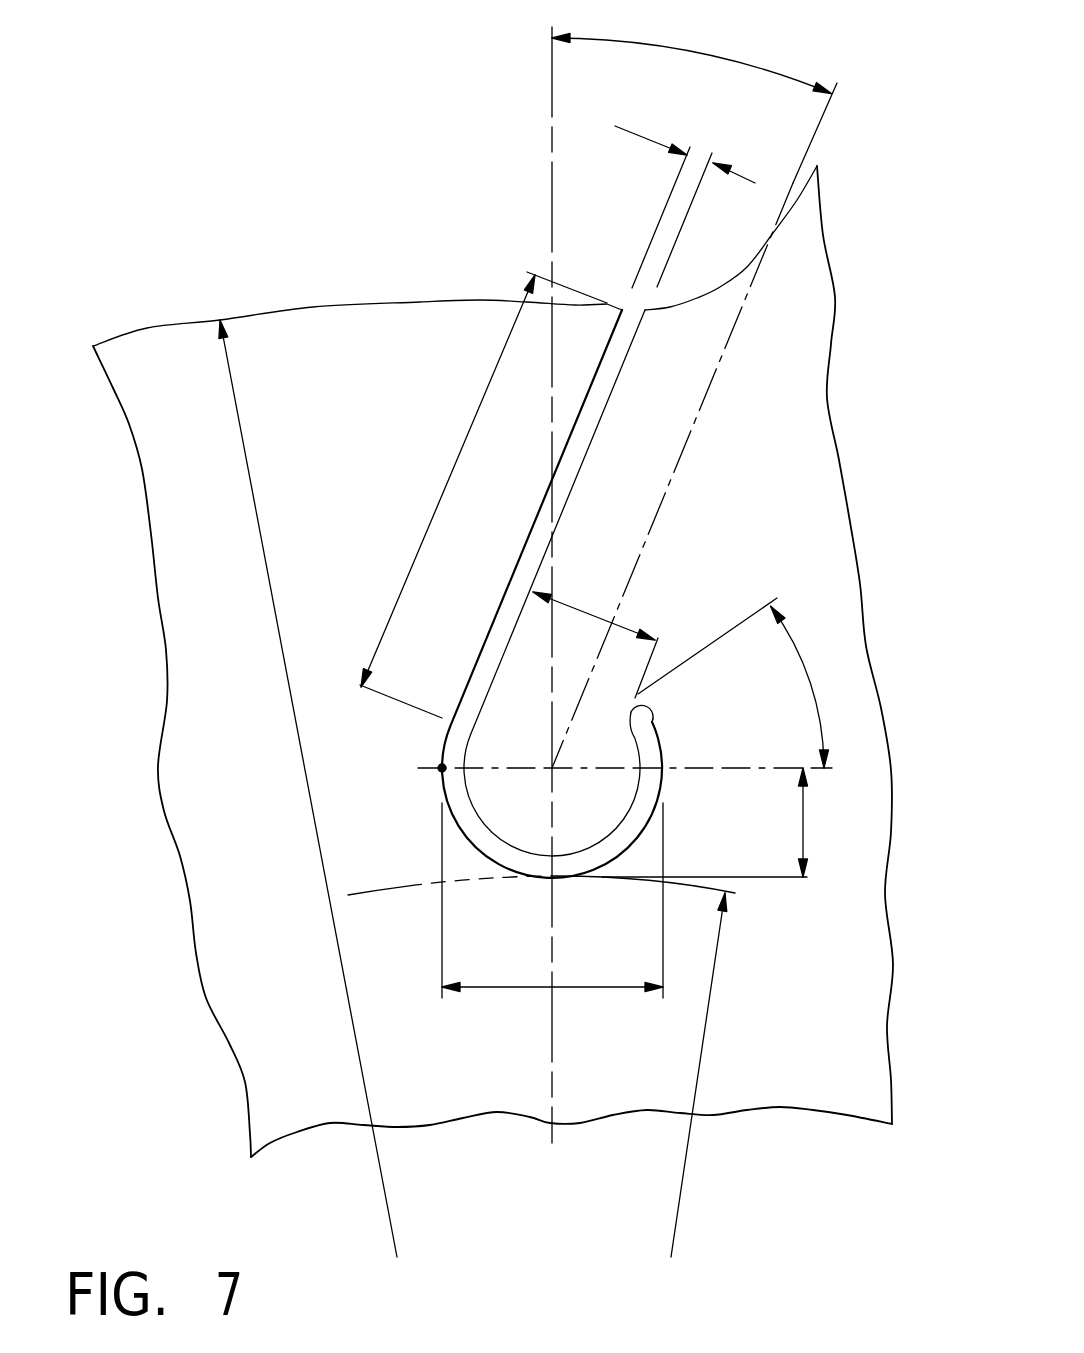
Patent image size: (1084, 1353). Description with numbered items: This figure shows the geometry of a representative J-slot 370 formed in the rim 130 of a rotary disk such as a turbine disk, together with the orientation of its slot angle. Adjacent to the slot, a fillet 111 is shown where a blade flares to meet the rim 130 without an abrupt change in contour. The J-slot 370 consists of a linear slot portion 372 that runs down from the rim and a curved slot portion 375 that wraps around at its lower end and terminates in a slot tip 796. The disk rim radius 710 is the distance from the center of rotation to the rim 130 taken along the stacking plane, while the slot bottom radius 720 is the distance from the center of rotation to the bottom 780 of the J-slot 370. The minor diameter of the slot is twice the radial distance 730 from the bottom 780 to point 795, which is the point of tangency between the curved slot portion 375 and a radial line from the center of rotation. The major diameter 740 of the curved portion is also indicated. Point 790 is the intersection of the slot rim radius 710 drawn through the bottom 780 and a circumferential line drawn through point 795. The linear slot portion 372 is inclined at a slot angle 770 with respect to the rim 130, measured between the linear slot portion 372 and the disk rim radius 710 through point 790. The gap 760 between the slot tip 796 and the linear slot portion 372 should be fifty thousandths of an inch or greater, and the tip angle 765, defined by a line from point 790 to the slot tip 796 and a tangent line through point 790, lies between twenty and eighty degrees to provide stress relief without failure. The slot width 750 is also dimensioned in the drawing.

The rim 130 is at (310, 303).
The fillet 111 is at (817, 304).
The J-slot 370 is at (405, 433).
The linear slot portion 372 is at (430, 527).
The curved slot portion 375 is at (448, 850).
The disk rim radius 710 is at (380, 1155).
The slot bottom radius 720 is at (690, 1155).
The radial distance 730 is at (800, 820).
The major diameter 740 is at (567, 990).
The slot width 750 is at (643, 150).
The gap 760 is at (618, 623).
The tip angle 765 is at (815, 690).
The slot angle 770 is at (717, 57).
The bottom 780 is at (553, 880).
The point 790 is at (552, 768).
The point 795 is at (440, 770).
The slot tip 796 is at (636, 706).